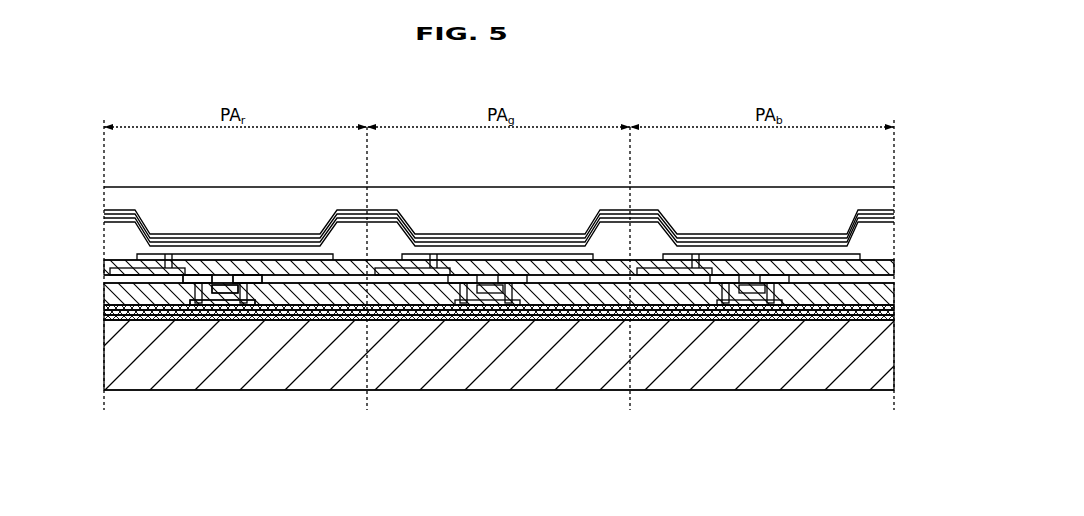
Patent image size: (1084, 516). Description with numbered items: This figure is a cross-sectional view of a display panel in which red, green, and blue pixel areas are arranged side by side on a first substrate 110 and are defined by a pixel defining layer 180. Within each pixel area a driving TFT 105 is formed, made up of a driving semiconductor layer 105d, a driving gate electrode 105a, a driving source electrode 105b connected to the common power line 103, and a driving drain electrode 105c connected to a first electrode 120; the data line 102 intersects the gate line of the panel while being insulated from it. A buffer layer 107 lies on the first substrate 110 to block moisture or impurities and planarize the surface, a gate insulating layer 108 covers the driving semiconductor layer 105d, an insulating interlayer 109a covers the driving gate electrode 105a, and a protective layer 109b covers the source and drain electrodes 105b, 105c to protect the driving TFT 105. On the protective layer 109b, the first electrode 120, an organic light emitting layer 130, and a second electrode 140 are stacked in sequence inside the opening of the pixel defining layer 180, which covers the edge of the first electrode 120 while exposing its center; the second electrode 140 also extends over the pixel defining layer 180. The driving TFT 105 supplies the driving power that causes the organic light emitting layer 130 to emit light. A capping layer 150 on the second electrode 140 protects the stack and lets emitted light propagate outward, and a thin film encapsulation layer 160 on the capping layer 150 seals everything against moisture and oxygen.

The data line 102 is at (106, 273).
The common power line 103 is at (356, 306).
The driving TFT 105 is at (300, 420).
The driving gate electrode 105a is at (225, 305).
The driving source electrode 105b is at (247, 283).
The driving drain electrode 105c is at (186, 283).
The driving semiconductor layer 105d is at (220, 293).
The buffer layer 107 is at (341, 308).
The gate insulating layer 108 is at (387, 298).
The insulating interlayer 109a is at (428, 313).
The protective layer 109b is at (117, 318).
The first substrate 110 is at (885, 350).
The first electrode 120 is at (169, 240).
The organic light emitting layer 130 is at (196, 246).
The second electrode 140 is at (214, 256).
The capping layer 150 is at (106, 213).
The thin film encapsulation layer 160 is at (496, 202).
The pixel defining layer 180 is at (347, 224).